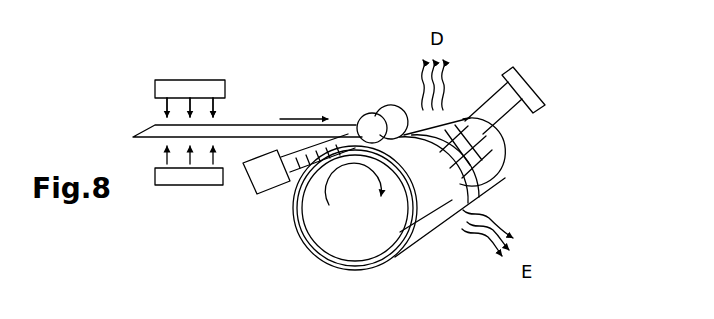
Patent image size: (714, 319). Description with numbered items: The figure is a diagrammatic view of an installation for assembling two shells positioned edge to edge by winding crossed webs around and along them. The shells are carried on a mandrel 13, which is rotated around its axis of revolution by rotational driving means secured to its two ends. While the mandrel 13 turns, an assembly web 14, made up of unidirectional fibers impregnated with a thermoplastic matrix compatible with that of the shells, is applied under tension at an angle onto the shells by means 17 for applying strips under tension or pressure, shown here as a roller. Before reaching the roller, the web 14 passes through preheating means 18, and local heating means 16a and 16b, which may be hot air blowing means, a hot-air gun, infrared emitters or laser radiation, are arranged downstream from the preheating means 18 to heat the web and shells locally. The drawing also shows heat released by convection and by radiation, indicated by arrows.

The mandrel 13 is at (372, 223).
The crossed assembly web 14 is at (502, 173).
The local heating means 16a is at (265, 200).
The local heating means 16b is at (537, 74).
The means for applying strips under tension or pressure 17 is at (371, 107).
The preheating means 18 is at (177, 76).